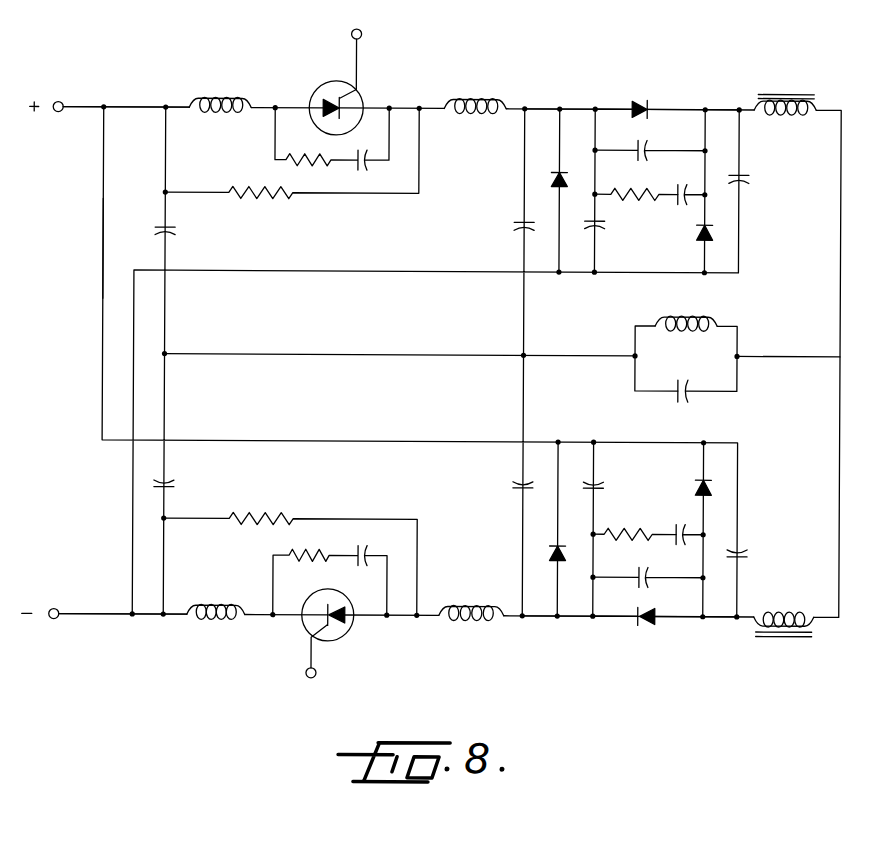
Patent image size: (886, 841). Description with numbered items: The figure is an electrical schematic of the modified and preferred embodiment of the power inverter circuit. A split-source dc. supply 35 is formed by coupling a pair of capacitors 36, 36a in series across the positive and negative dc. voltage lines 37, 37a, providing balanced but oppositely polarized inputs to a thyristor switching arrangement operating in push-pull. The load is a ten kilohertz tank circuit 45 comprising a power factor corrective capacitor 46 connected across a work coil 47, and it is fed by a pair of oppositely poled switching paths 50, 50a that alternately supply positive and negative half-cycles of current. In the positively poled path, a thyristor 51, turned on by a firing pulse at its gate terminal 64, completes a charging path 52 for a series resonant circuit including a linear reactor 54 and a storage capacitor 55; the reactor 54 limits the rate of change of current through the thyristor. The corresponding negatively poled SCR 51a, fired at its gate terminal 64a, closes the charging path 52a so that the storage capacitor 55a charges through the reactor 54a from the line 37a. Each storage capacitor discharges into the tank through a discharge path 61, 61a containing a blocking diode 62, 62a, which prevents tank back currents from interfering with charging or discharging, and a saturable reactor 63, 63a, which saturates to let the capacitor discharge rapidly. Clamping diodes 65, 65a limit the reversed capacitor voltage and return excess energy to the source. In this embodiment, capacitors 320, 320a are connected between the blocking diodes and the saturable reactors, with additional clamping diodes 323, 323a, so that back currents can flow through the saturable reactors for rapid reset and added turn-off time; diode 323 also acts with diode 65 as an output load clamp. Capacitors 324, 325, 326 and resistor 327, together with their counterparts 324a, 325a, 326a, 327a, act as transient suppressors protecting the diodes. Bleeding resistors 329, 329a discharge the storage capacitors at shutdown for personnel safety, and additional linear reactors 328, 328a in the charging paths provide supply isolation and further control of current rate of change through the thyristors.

The split-source dc. supply 35 is at (90, 287).
The positive dc. voltage line 37 is at (79, 107).
The negative dc. voltage line 37a is at (62, 618).
The charging path 52 is at (150, 107).
The charging path 52a is at (148, 618).
The linear reactor 328 is at (220, 98).
The linear reactor 328a is at (222, 620).
The thyristor 51 is at (330, 82).
The negatively poled SCR 51a is at (345, 633).
The gate terminal 64 is at (361, 33).
The gate terminal 64a is at (307, 679).
The bleeding resistor 329 is at (258, 200).
The bleeding resistor 329a is at (265, 516).
The capacitor 36 is at (172, 232).
The capacitor 36a is at (174, 481).
The linear reactor 54 is at (476, 98).
The reactor 54a is at (476, 622).
The positively poled switching path 50 is at (544, 97).
The negatively poled switching path 50a is at (532, 626).
The discharge path 61 is at (612, 107).
The discharge path 61a is at (620, 620).
The blocking diode 62 is at (645, 100).
The blocking diode 62a is at (648, 630).
The saturable reactor 63 is at (788, 96).
The saturable reactor 63a is at (782, 638).
The clamping diode 65 is at (554, 182).
The clamping diode 65a is at (552, 552).
The storage capacitor 55 is at (517, 228).
The storage capacitor 55a is at (515, 483).
The capacitor 326 is at (648, 145).
The capacitor 326a is at (655, 582).
The resistor 327 is at (647, 190).
The resistor 327a is at (645, 516).
The capacitor 325 is at (680, 206).
The capacitor 325a is at (680, 528).
The capacitor 324 is at (600, 231).
The capacitor 324a is at (600, 478).
The clamping diode 323 is at (713, 231).
The clamping diode 323a is at (713, 492).
The capacitor 320 is at (749, 181).
The capacitor 320a is at (750, 556).
The tank circuit 45 is at (688, 366).
The power factor corrective capacitor 46 is at (690, 394).
The work coil 47 is at (718, 322).